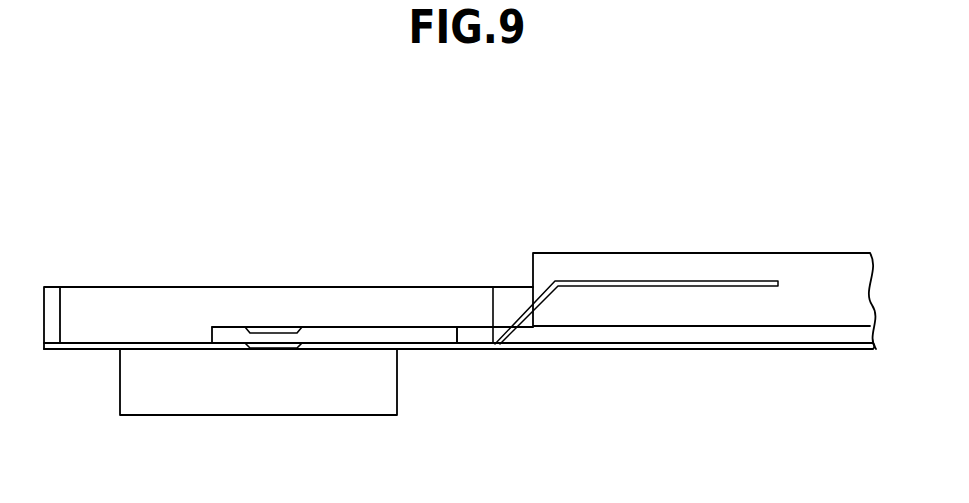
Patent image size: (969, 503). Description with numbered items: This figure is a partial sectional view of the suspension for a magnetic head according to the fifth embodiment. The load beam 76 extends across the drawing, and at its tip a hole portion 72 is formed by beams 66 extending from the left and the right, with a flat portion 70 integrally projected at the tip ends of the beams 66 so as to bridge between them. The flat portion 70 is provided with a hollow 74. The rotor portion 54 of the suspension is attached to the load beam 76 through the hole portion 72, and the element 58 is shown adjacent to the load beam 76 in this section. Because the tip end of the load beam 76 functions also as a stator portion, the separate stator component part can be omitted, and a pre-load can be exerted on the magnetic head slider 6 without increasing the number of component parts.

The magnetic head slider 6 is at (203, 387).
The rotor portion 54 is at (770, 281).
The main body 58 is at (143, 303).
The beam 66 is at (472, 325).
The flat portion 70 is at (362, 325).
The hole portion 72 is at (475, 335).
The hollow 74 is at (274, 338).
The load beam 76 is at (815, 334).